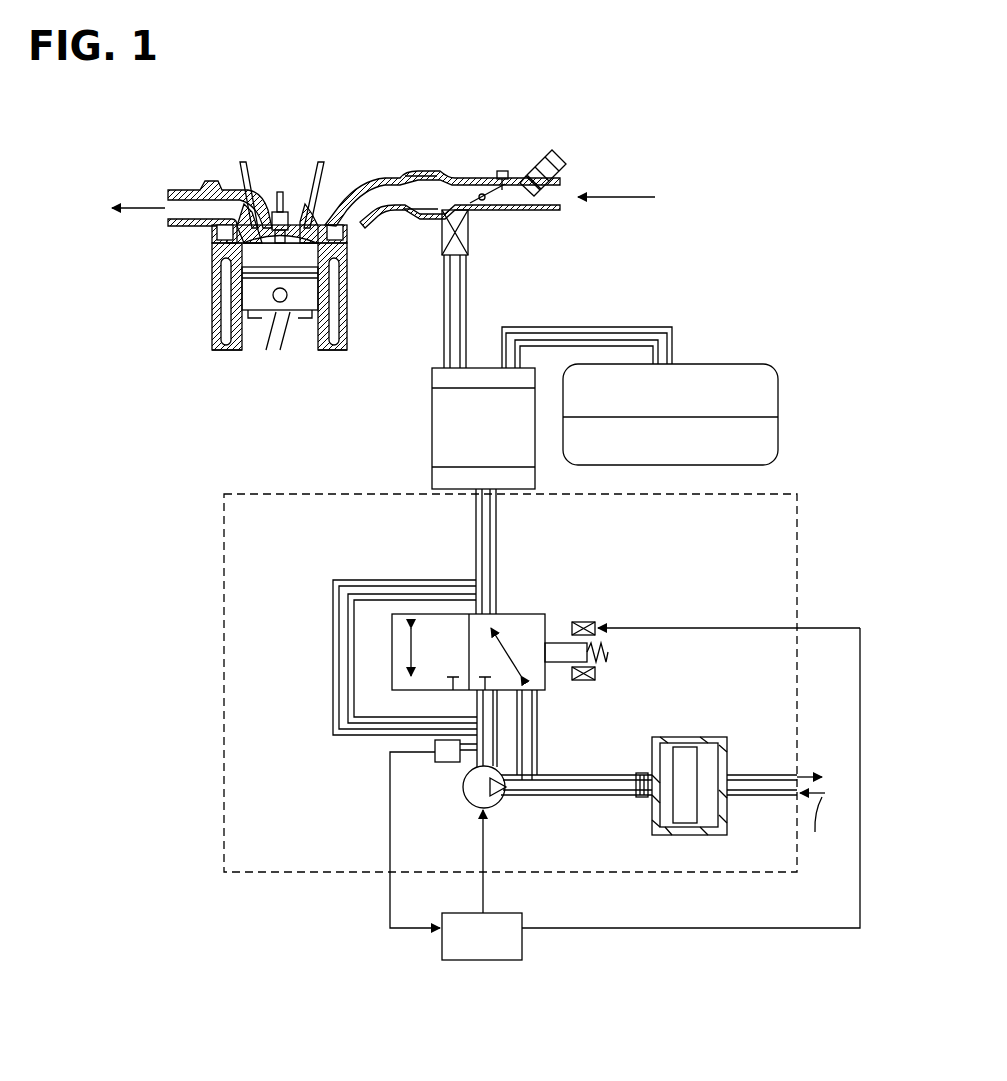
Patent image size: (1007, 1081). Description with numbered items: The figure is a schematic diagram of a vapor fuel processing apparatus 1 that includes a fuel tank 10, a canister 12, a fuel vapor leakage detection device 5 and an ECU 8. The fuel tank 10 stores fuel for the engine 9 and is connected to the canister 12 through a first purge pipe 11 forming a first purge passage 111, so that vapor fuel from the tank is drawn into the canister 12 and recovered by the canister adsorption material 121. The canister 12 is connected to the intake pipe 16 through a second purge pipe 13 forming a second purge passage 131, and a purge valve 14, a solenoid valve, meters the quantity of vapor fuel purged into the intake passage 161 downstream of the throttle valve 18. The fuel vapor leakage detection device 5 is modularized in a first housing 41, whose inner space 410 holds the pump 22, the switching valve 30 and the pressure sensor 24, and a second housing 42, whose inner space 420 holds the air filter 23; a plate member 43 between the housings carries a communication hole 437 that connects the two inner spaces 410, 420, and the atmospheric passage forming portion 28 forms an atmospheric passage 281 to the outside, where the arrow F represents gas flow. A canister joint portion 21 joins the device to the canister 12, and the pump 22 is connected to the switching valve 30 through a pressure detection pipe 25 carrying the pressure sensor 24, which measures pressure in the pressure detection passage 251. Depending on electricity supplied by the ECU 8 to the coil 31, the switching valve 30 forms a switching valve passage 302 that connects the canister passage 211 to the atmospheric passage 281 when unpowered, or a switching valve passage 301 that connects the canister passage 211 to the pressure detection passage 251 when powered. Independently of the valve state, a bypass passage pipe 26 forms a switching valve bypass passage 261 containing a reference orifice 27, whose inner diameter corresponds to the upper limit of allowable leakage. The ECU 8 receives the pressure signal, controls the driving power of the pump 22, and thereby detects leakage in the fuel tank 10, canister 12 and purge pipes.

The vapor fuel processing apparatus 1 is at (747, 300).
The fuel vapor leakage detection device 5 is at (797, 527).
The ECU 8 is at (483, 962).
The engine 9 is at (212, 330).
The fuel tank 10 is at (683, 364).
The first purge pipe 11 is at (588, 328).
The first purge passage 111 is at (630, 340).
The canister 12 is at (432, 392).
The canister adsorption material 121 is at (457, 448).
The second purge pipe 13 is at (464, 320).
The second purge passage 131 is at (458, 292).
The purge valve 14 is at (469, 243).
The intake pipe 16 is at (453, 182).
The intake passage 161 is at (418, 188).
The throttle valve 18 is at (502, 172).
The canister joint portion 21 is at (478, 543).
The canister passage 211 is at (480, 512).
The pump 22 is at (492, 806).
The air filter 23 is at (685, 757).
The pressure sensor 24 is at (437, 764).
The pressure detection pipe 25 is at (495, 708).
The pressure detection passage 251 is at (481, 700).
The bypass passage pipe 26 is at (334, 597).
The switching valve bypass passage 261 is at (347, 626).
The reference orifice 27 is at (340, 662).
The atmospheric passage forming portion 28 is at (742, 774).
The atmospheric passage 281 is at (755, 792).
The switching valve 30 is at (503, 610).
The switching valve passage 301 is at (400, 657).
The switching valve passage 302 is at (512, 637).
The coil 31 is at (597, 673).
The first housing 41 is at (562, 774).
The inner space 410 is at (582, 796).
The second housing 42 is at (668, 743).
The inner space 420 is at (708, 820).
The coupling 43 is at (644, 774).
The communication hole 437 is at (644, 796).